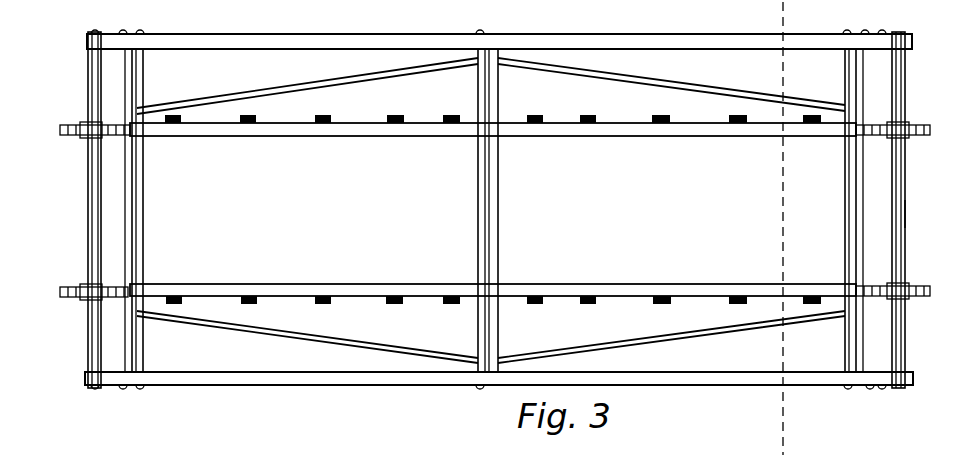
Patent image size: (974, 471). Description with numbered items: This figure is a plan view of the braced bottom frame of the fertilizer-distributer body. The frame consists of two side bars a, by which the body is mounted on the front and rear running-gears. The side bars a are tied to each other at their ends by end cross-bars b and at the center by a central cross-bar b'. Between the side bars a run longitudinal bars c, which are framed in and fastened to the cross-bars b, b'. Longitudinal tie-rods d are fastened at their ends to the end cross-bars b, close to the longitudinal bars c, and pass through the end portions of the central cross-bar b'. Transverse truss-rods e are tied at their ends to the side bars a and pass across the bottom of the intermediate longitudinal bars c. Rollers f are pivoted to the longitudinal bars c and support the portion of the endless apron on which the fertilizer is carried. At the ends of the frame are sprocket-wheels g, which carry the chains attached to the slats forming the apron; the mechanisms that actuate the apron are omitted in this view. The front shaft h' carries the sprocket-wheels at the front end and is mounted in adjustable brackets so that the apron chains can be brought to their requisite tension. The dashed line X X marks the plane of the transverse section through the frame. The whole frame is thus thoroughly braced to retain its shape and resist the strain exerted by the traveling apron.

The side bars a is at (499, 211).
The end cross-bars b is at (496, 210).
The central cross-bar b' is at (503, 210).
The longitudinal bars c is at (611, 136).
The longitudinal tie-rods d is at (491, 210).
The transverse truss-rods e is at (143, 223).
The rollers f is at (240, 118).
The sprocket-wheels g is at (60, 131).
The front shaft h' is at (917, 214).
The section line X X is at (740, 8).